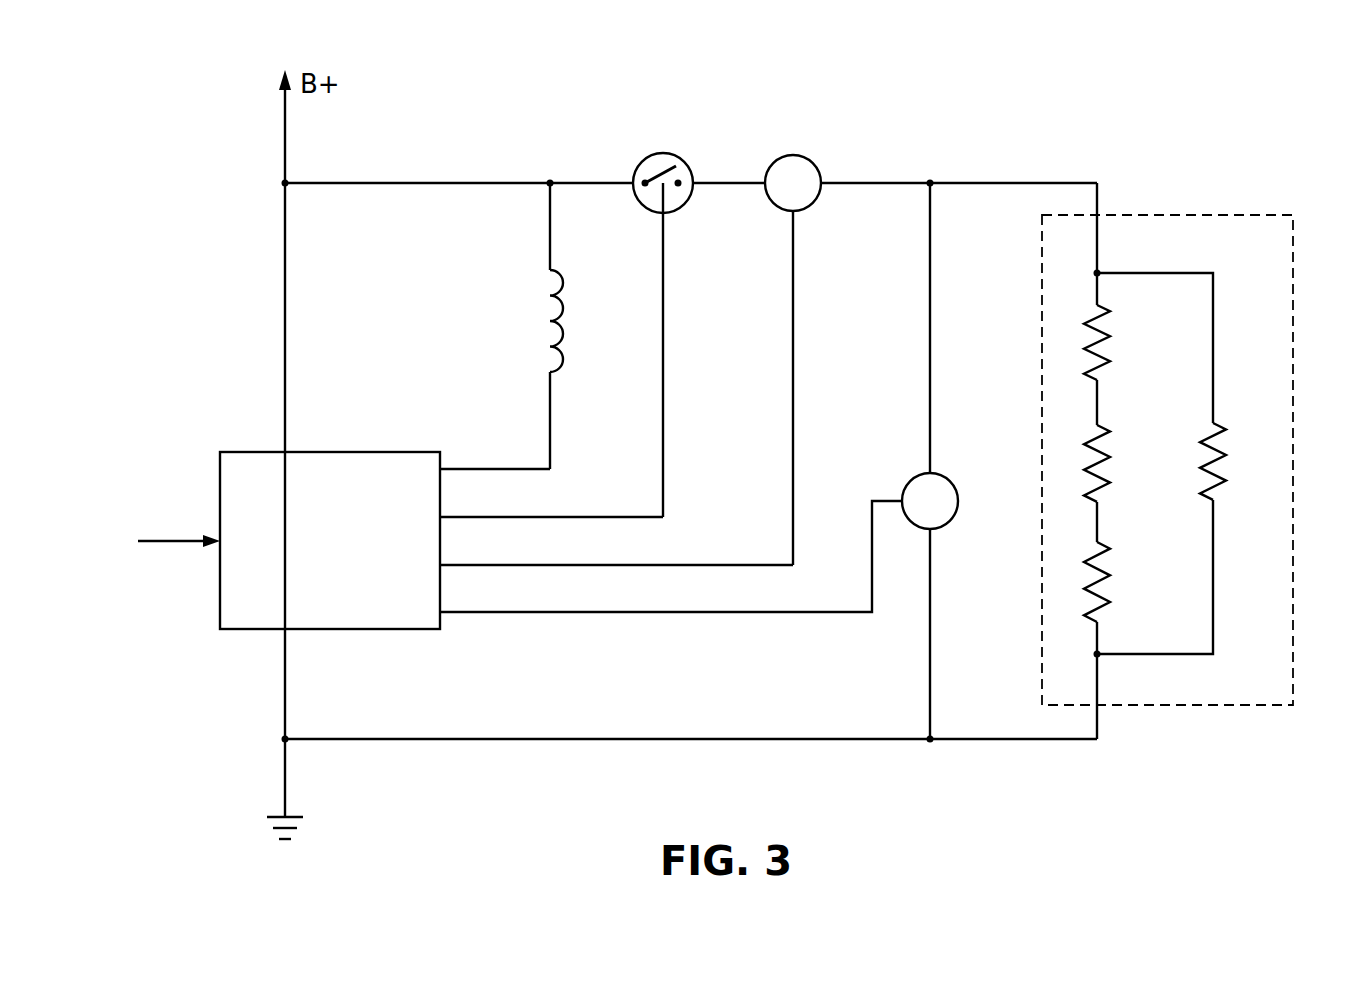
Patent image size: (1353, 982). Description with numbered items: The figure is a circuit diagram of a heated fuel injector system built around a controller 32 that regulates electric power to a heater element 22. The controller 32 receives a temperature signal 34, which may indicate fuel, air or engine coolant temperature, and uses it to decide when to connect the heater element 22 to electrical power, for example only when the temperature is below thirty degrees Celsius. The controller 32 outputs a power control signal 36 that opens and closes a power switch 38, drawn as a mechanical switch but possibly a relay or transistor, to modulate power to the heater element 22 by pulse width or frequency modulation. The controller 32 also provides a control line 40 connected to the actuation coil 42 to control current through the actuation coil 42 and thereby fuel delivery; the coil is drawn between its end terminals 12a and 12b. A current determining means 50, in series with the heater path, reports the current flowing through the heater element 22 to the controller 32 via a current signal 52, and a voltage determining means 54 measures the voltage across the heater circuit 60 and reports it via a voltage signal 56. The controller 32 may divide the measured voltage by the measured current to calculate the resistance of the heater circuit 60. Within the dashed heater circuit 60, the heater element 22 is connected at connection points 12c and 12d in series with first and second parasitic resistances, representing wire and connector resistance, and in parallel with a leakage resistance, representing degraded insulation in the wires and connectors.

The controller 32 is at (253, 452).
The temperature signal 34 is at (165, 540).
The power control signal 36 is at (643, 516).
The power switch 38 is at (640, 163).
The control line 40 is at (487, 468).
The actuation coil 42 is at (557, 322).
The coil first terminal 12a is at (550, 400).
The coil second terminal 12b is at (550, 253).
The connection point 12c is at (1095, 395).
The connection point 12d is at (1095, 527).
The heater element 22 is at (1093, 450).
The current determining means 50 is at (782, 157).
The current signal 52 is at (773, 564).
The voltage determining means 54 is at (915, 477).
The voltage signal 56 is at (852, 612).
The heater circuit 60 is at (1228, 214).